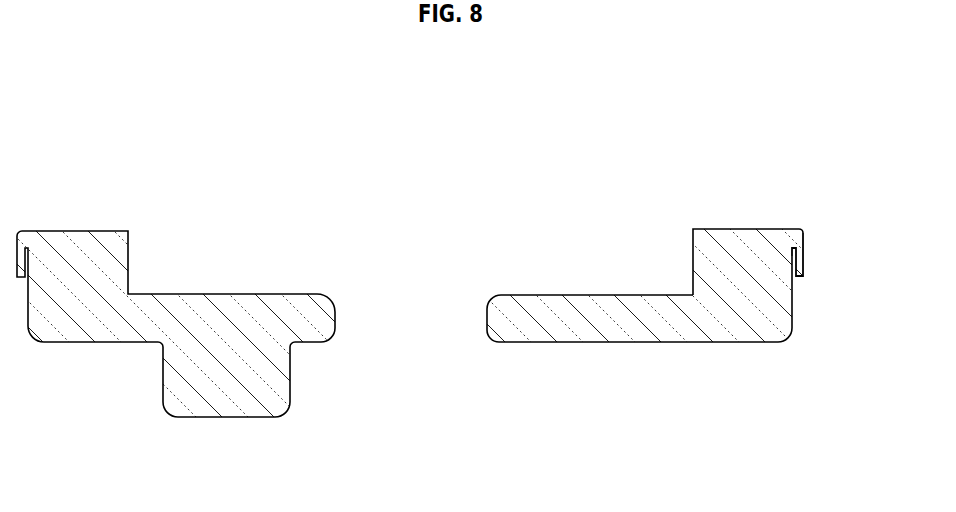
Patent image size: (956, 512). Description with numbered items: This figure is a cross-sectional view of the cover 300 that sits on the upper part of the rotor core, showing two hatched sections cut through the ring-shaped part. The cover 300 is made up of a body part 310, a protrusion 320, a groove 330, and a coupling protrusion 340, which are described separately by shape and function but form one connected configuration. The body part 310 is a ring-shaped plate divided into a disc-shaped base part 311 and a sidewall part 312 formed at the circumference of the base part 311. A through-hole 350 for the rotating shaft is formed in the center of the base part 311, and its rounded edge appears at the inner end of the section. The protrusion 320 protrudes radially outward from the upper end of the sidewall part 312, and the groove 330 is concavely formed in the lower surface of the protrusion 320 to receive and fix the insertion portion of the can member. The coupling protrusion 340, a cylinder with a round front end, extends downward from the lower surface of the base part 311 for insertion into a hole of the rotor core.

The cover 300 is at (643, 243).
The body part 310 is at (643, 326).
The base part 311 is at (616, 331).
The sidewall part 312 is at (703, 267).
The protrusion 320 is at (798, 257).
The groove 330 is at (796, 278).
The coupling protrusion 340 is at (160, 377).
The through-hole 350 is at (486, 318).